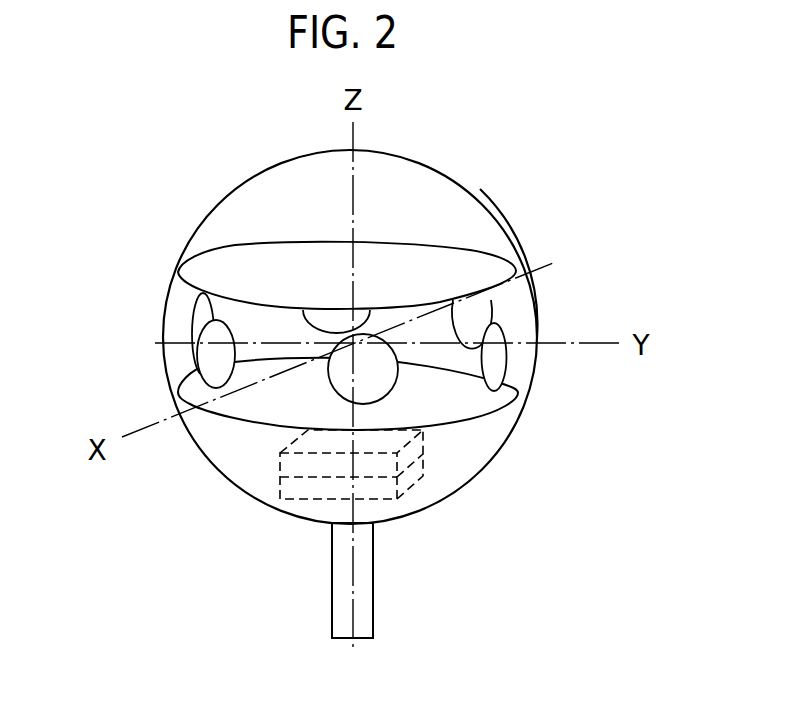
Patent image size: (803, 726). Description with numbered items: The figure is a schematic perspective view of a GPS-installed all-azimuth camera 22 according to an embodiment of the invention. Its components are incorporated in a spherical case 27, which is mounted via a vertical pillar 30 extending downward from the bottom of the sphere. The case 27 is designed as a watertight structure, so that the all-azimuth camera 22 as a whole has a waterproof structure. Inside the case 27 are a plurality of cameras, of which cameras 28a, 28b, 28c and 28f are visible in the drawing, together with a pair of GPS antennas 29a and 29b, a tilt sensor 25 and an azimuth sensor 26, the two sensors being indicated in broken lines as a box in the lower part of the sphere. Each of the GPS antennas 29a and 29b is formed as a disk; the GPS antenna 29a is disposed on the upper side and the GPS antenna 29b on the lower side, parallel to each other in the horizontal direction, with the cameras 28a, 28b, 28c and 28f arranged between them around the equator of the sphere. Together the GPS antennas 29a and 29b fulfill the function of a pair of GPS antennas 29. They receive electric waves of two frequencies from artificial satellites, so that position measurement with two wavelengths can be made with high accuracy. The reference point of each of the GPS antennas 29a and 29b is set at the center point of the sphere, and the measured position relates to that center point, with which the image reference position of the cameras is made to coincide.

The GPS-installed all-azimuth camera 22 is at (478, 197).
The tilt sensor 25 is at (410, 487).
The azimuth sensor 26 is at (420, 440).
The spherical case 27 is at (498, 220).
The camera 28a is at (507, 323).
The camera 28b is at (330, 384).
The camera 28c is at (192, 364).
The camera 28f is at (493, 305).
The pair of GPS antennas 29 is at (282, 242).
The GPS antenna 29a is at (398, 242).
The GPS antenna 29b is at (237, 423).
The vertical pillar 30 is at (374, 607).